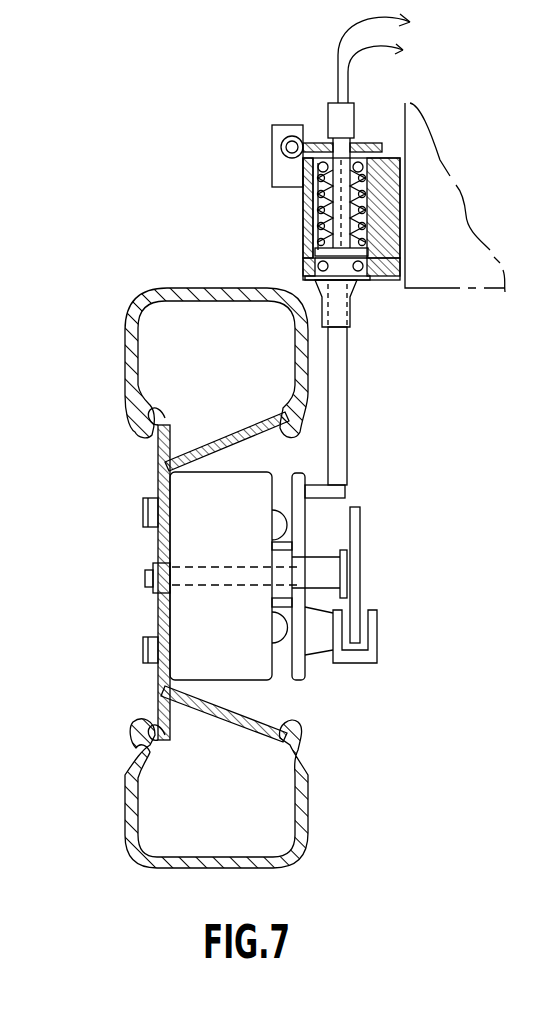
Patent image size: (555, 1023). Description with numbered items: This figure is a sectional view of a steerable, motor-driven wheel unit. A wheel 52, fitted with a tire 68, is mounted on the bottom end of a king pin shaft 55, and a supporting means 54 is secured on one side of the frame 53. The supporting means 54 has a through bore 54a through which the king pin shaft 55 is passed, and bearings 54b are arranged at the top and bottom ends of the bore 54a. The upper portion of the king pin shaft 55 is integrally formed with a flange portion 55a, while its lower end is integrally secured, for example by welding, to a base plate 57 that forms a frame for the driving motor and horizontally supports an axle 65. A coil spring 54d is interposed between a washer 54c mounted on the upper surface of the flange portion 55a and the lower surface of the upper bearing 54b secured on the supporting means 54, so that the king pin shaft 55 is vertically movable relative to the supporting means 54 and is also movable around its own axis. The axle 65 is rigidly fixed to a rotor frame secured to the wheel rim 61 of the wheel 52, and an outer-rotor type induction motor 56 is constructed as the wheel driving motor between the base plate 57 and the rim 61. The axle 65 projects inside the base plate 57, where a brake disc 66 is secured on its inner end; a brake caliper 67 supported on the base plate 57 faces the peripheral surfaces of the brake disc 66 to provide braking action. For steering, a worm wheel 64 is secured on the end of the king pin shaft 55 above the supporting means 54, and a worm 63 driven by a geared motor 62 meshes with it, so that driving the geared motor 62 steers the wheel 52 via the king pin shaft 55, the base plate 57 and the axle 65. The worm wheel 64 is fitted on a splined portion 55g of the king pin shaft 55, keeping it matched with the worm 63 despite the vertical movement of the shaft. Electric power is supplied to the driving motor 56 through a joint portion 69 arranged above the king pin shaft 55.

The wheel 52 is at (118, 303).
The frame 53 is at (467, 273).
The supporting means 54 is at (355, 232).
The through bore 54a is at (380, 200).
The bearings 54b is at (365, 168).
The washer 54c is at (368, 252).
The coil spring 54d is at (322, 232).
The king pin shaft 55 is at (348, 405).
The flange portion 55a is at (322, 262).
The splined portion 55g is at (352, 122).
The induction motor 56 is at (187, 656).
The base plate 57 is at (333, 497).
The wheel rim 61 is at (167, 465).
The geared motor 62 is at (278, 125).
The worm 63 is at (270, 142).
The worm wheel 64 is at (317, 142).
The axle 65 is at (333, 580).
The brake disc 66 is at (360, 520).
The brake caliper 67 is at (377, 663).
The tire 68 is at (143, 857).
The joint portion 69 is at (330, 140).